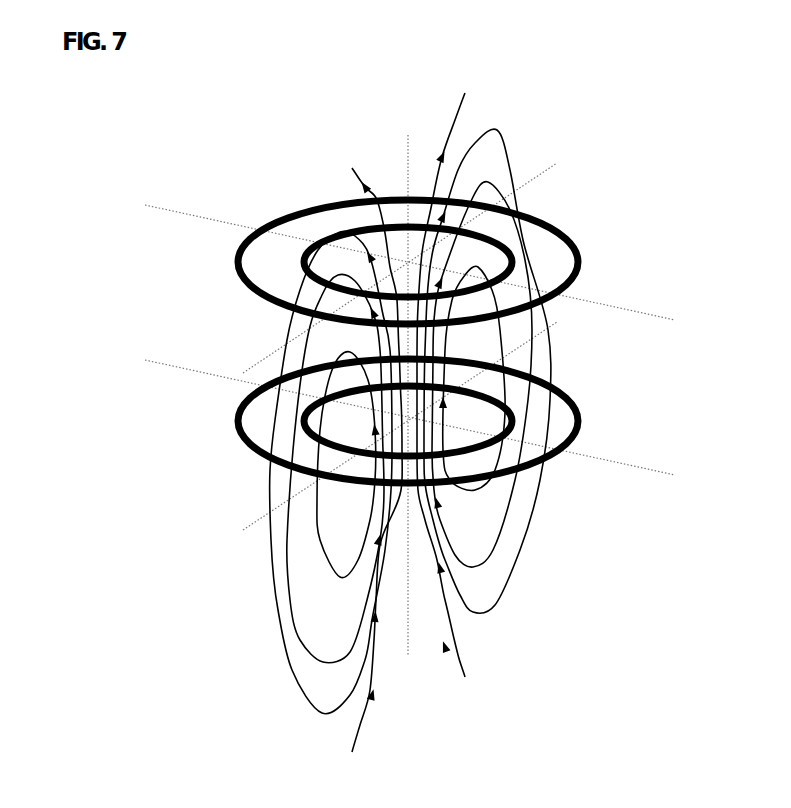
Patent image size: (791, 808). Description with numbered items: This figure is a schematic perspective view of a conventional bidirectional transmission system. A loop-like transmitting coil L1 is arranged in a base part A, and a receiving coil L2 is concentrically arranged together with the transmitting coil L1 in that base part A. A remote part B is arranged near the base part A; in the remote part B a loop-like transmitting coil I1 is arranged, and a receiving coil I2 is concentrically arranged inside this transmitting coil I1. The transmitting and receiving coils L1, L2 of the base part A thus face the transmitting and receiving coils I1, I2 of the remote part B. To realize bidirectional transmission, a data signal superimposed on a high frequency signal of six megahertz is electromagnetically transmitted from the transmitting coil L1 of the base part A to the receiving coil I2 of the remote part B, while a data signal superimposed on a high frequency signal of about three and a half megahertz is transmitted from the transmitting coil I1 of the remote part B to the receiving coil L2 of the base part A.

The transmitting coil I1 is at (333, 208).
The receiving coil I2 is at (507, 254).
The transmitting coil L1 is at (304, 420).
The receiving coil L2 is at (545, 462).
The base part A is at (187, 529).
The remote part B is at (195, 134).